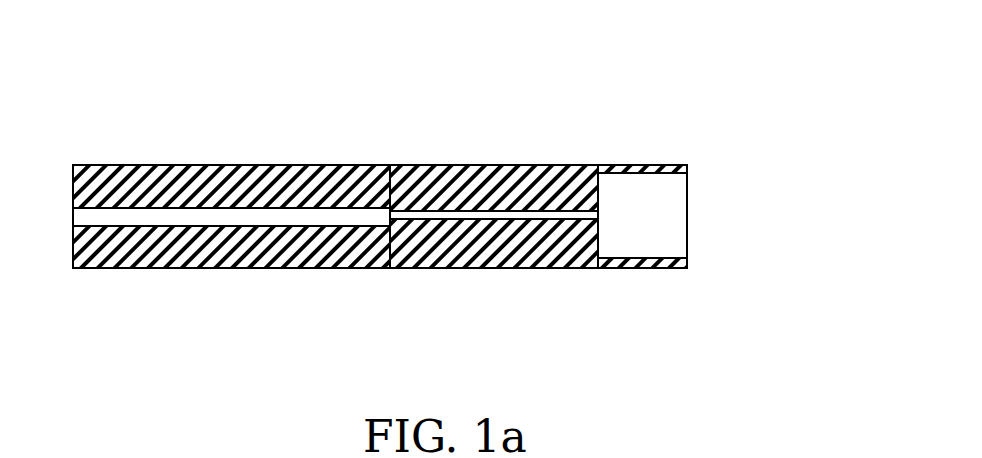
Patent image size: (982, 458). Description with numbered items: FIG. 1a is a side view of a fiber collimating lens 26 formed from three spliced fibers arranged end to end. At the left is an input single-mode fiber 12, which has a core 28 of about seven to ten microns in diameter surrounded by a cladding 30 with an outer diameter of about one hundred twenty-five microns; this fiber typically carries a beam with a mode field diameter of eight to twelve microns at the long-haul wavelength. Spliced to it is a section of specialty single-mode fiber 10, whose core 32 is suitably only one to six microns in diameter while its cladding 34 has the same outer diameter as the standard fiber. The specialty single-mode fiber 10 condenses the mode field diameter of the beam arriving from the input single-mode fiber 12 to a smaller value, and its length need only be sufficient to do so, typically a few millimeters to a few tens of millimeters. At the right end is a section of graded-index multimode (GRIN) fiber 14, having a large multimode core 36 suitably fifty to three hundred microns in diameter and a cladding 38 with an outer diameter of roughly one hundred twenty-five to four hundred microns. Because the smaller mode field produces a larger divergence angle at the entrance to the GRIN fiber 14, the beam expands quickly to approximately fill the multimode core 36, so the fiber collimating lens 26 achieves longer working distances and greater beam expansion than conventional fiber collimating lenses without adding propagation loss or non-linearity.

The fiber collimating lens 26 is at (135, 98).
The cladding 30 is at (185, 168).
The core 28 is at (303, 215).
The input single-mode fiber 12 is at (204, 289).
The cladding 34 is at (445, 180).
The core 32 is at (528, 217).
The specialty single-mode fiber 10 is at (465, 288).
The cladding 38 is at (623, 165).
The multimode core 36 is at (667, 215).
The graded-index multimode (GRIN) fiber 14 is at (622, 288).